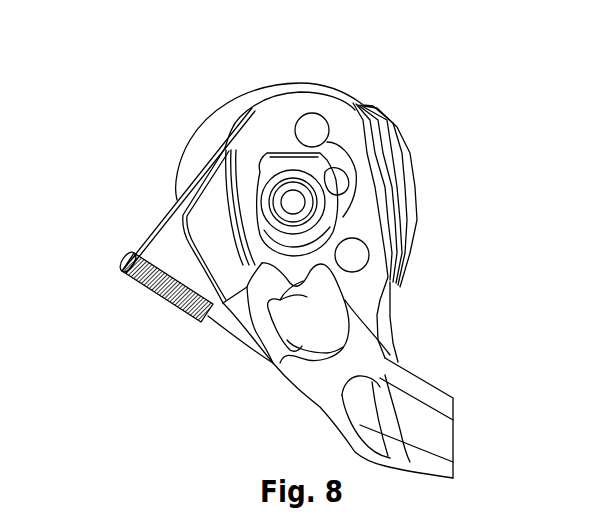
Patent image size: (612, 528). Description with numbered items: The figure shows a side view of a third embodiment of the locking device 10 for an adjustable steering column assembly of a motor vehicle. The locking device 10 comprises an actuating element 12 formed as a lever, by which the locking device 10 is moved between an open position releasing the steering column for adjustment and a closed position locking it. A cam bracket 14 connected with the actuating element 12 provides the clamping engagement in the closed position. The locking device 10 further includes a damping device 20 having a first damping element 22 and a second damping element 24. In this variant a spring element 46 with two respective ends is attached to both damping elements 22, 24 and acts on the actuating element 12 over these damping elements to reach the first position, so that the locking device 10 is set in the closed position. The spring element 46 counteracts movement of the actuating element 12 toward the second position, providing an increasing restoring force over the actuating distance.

The locking device 10 is at (474, 101).
The actuating element 12 is at (433, 432).
The cam bracket 14 is at (333, 148).
The damping device 20 is at (412, 290).
The first damping element 22 is at (340, 318).
The second damping element 24 is at (385, 200).
The spring element 46 is at (123, 271).